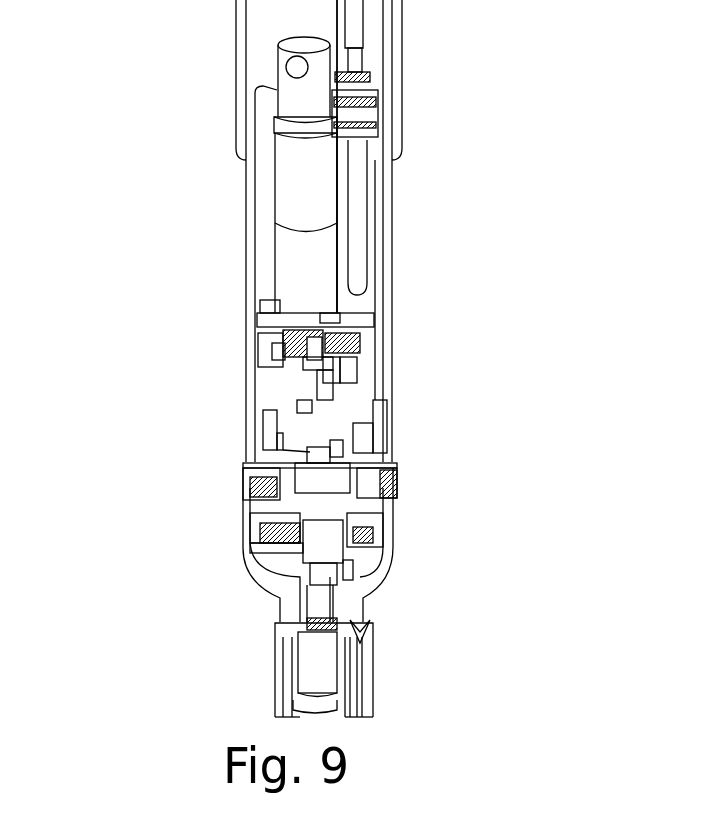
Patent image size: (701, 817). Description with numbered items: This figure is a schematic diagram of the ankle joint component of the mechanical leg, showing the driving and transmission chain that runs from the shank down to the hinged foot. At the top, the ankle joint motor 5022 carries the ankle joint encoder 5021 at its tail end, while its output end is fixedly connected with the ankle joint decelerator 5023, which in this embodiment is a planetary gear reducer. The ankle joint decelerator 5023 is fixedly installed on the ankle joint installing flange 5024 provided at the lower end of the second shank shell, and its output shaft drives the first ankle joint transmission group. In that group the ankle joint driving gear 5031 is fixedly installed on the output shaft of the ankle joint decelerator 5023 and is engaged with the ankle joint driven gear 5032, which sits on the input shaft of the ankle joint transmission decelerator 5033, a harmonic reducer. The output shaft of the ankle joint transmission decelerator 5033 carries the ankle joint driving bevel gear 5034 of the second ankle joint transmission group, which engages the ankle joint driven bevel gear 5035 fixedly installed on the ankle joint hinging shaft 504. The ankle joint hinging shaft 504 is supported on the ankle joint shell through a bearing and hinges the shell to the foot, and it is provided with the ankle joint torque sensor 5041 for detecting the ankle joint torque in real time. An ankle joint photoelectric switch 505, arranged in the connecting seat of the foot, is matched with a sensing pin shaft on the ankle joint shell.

The ankle joint encoder 5021 is at (298, 90).
The ankle joint motor 5022 is at (307, 152).
The ankle joint decelerator 5023 is at (310, 260).
The ankle joint installing flange 5024 is at (352, 318).
The ankle joint driving gear 5031 is at (300, 335).
The ankle joint driven gear 5032 is at (330, 346).
The ankle joint transmission decelerator 5033 is at (302, 396).
The ankle joint driving bevel gear 5034 is at (305, 462).
The ankle joint driven bevel gear 5035 is at (275, 498).
The ankle joint torque sensor 5041 is at (338, 508).
The ankle joint hinging shaft 504 is at (367, 512).
The ankle joint photoelectric switch 505 is at (290, 567).